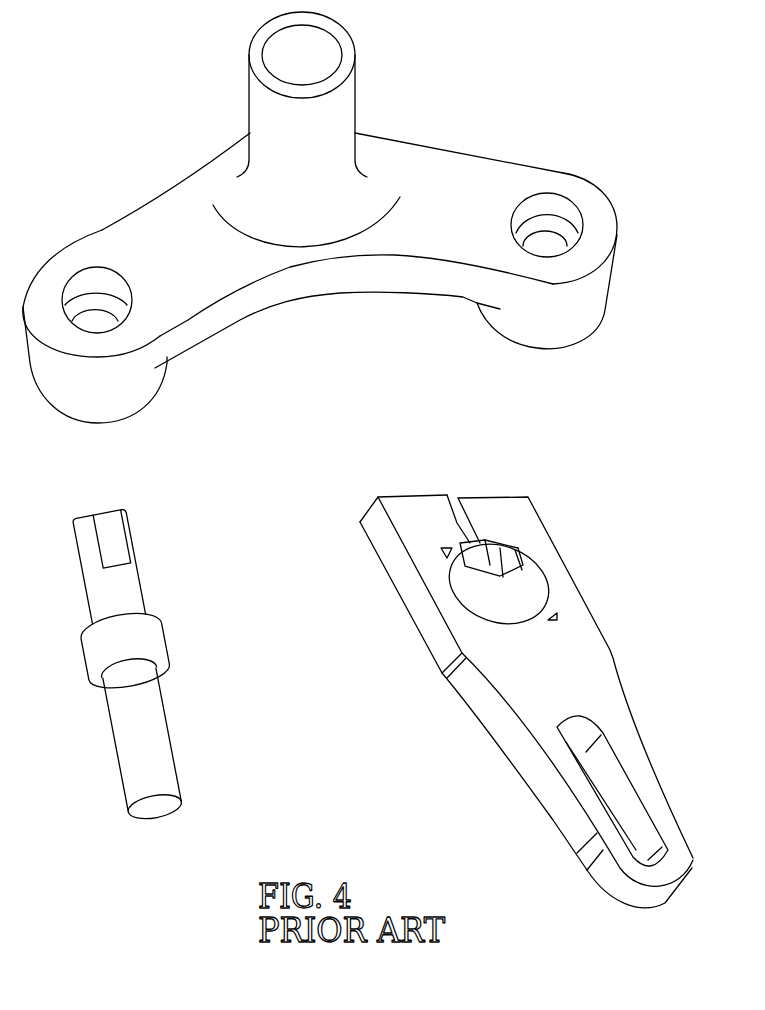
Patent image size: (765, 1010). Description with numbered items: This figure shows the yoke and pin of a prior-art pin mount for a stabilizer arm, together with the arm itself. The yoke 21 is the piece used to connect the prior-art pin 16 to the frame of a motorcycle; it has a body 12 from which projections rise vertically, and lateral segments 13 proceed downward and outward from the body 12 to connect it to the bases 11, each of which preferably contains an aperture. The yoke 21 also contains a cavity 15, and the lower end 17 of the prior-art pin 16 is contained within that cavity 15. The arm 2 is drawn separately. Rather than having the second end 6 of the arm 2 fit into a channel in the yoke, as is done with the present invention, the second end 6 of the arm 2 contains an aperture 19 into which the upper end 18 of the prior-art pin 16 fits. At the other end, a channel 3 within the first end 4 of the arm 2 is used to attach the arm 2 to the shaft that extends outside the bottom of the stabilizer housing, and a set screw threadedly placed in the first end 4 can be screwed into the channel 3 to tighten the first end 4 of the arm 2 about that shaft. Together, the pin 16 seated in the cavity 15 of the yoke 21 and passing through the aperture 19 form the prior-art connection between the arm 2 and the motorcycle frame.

The yoke 21 is at (137, 90).
The cavity 15 is at (277, 48).
The bases 11 is at (78, 405).
The body 12 is at (310, 285).
The lateral segments 13 is at (168, 340).
The prior-art pin 16 is at (177, 557).
The lower end 17 is at (170, 781).
The upper end 18 is at (105, 522).
The arm 2 is at (608, 573).
The channel 3 is at (472, 588).
The first end 4 is at (540, 552).
The second end 6 is at (648, 800).
The aperture 19 is at (583, 765).